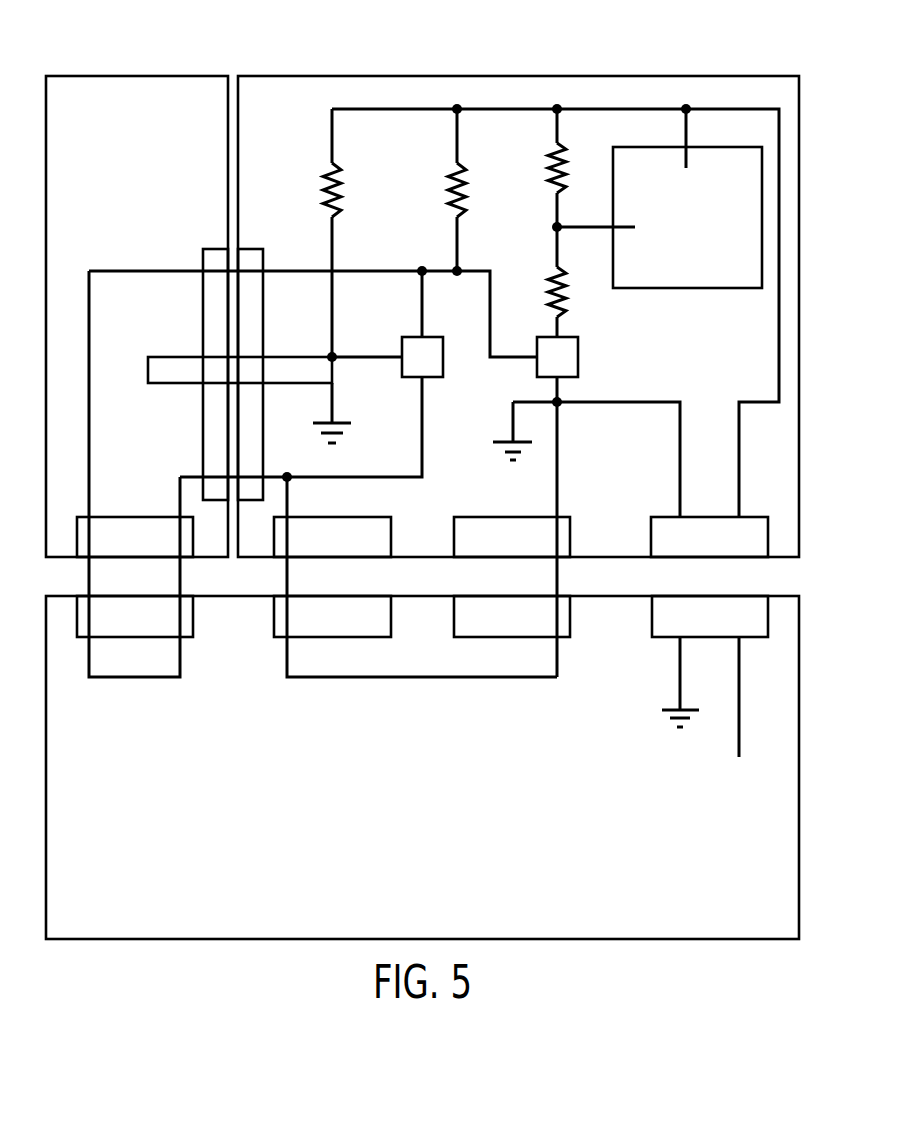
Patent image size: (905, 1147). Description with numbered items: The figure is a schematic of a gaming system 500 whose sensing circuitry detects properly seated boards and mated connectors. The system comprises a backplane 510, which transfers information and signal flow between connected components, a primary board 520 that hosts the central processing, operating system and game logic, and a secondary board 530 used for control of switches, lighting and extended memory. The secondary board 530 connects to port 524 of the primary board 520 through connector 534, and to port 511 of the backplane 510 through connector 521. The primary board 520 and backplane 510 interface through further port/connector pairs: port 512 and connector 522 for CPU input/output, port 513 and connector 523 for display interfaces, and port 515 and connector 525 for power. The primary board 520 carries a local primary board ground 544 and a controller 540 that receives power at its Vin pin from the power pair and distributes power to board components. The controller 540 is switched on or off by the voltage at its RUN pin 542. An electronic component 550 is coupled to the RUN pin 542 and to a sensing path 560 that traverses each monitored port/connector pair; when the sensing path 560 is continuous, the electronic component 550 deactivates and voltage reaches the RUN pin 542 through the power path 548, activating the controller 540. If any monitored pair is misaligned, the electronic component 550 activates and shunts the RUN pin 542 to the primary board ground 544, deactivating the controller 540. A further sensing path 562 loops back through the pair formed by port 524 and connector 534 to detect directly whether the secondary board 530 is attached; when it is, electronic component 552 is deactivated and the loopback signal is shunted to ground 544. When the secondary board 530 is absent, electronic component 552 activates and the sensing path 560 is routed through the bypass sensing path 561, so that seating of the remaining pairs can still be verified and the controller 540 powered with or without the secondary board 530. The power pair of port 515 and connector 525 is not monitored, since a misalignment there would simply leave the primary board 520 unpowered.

The gaming system 500 is at (122, 40).
The backplane 510 is at (577, 939).
The port 511 is at (107, 637).
The port 512 is at (303, 637).
The port 513 is at (485, 637).
The port 515 is at (652, 617).
The primary board 520 is at (422, 76).
The connector 521 is at (107, 517).
The connector 522 is at (304, 517).
The connector 523 is at (485, 517).
The port 524 is at (248, 248).
The connector 525 is at (651, 540).
The secondary board 530 is at (138, 76).
The connector 534 is at (217, 248).
The controller 540 is at (687, 240).
The RUN pin 542 is at (625, 230).
The primary board ground 544 is at (345, 425).
The power path 548 is at (554, 224).
The electronic component 550 is at (578, 350).
The electronic component 552 is at (432, 377).
The sensing path 560 is at (122, 268).
The sensing path 561 is at (380, 477).
The sensing path 562 is at (147, 370).